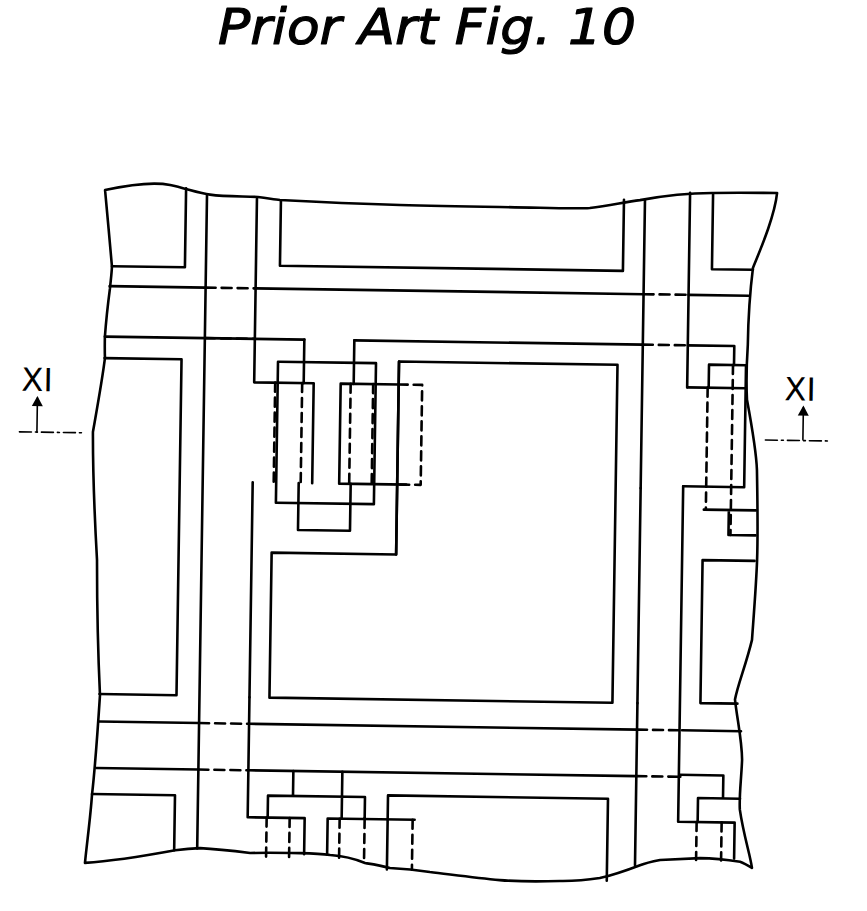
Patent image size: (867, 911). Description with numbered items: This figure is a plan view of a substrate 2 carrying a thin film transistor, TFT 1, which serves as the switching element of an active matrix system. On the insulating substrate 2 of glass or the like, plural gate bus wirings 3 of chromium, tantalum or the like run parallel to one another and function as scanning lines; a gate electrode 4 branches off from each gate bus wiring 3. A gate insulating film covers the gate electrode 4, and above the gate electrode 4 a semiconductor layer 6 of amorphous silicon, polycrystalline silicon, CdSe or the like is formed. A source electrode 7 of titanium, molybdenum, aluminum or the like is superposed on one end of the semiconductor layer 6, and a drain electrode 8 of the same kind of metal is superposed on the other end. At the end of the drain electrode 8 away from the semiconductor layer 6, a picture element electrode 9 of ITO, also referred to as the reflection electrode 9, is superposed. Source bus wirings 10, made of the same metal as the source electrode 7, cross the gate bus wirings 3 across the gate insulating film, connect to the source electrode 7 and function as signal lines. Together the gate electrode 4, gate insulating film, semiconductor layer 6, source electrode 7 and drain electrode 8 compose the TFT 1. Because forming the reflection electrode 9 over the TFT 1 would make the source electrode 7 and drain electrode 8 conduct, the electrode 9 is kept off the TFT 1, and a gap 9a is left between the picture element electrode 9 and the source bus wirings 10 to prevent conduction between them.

The TFT 1 is at (141, 371).
The substrate 2 is at (400, 206).
The gate bus wiring 3 is at (124, 307).
The gate electrode 4 is at (310, 522).
The semiconductor layer 6 is at (314, 375).
The source electrode 7 is at (259, 450).
The drain electrode 8 is at (384, 421).
The picture element electrode 9 is at (476, 377).
The gap 9a is at (194, 631).
The source bus wiring 10 is at (229, 212).